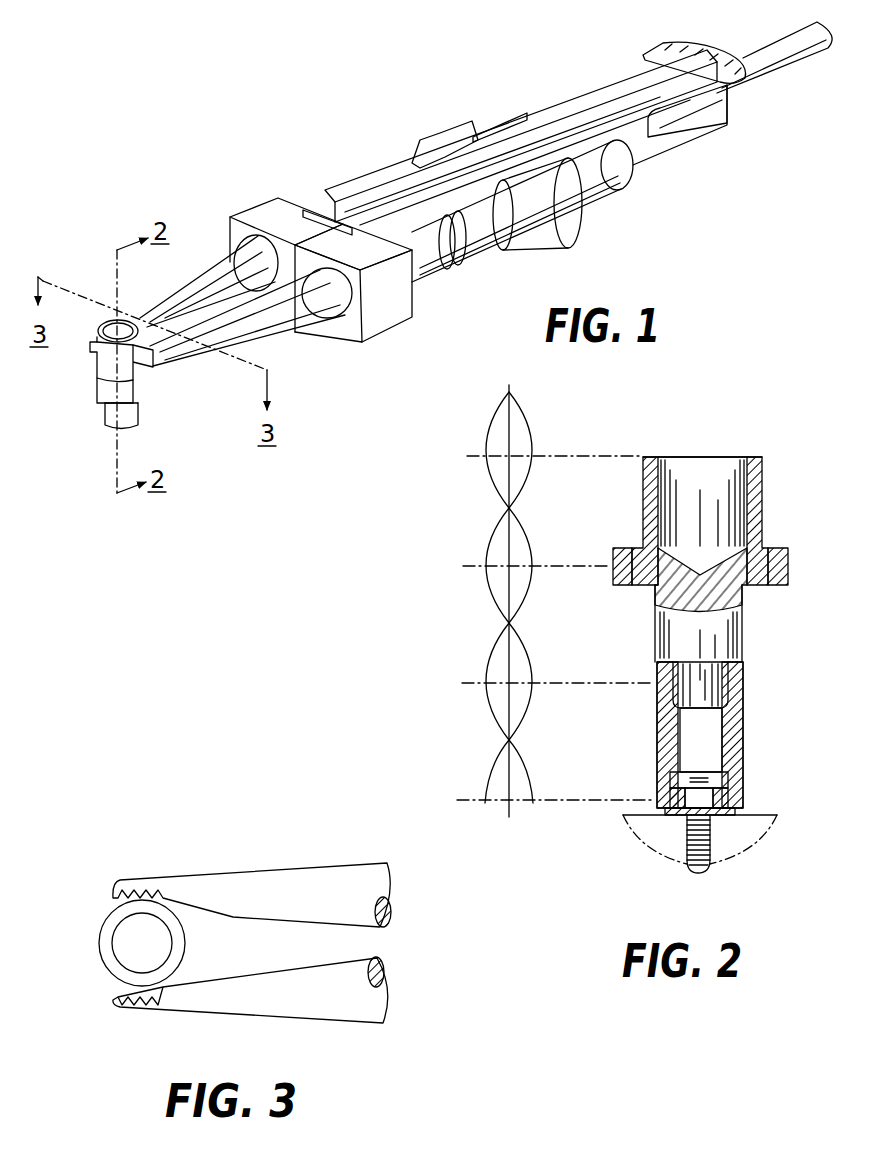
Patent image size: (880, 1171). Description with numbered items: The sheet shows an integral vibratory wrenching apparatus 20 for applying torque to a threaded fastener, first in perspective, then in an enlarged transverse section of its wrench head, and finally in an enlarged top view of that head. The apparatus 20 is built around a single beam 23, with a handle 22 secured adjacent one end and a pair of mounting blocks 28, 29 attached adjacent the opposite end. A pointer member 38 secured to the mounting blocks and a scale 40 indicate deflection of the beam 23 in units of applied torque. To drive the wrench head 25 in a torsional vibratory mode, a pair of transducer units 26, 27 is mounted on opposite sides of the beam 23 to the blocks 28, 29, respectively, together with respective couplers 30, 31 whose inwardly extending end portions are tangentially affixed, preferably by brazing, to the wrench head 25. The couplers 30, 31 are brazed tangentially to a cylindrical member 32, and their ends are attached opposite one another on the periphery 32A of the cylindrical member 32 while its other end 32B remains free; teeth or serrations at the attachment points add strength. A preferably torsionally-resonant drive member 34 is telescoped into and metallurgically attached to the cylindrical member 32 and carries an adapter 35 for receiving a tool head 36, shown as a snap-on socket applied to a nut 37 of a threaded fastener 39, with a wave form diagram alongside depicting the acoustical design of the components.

In FIG. 1, the vibratory wrenching apparatus 20 is at (337, 124).
In FIG. 1, the handle 22 is at (802, 68).
In FIG. 1, the beam 23 is at (680, 142).
In FIG. 1, the wrench head 25 is at (92, 389).
In FIG. 1, the transducer unit 26 is at (565, 228).
In FIG. 1, the transducer unit 27 is at (453, 142).
In FIG. 1, the mounting block 28 is at (400, 320).
In FIG. 1, the mounting block 29 is at (262, 200).
In FIG. 1, the coupler 30 is at (290, 332).
In FIG. 2, the coupler 30 is at (788, 552).
In FIG. 3, the coupler 30 is at (290, 1020).
In FIG. 1, the coupler 31 is at (196, 282).
In FIG. 2, the coupler 31 is at (613, 550).
In FIG. 3, the coupler 31 is at (293, 870).
In FIG. 2, the cylindrical member 32 is at (762, 470).
In FIG. 3, the cylindrical member 32 is at (100, 953).
In FIG. 2, the periphery of cylindrical member 32A is at (757, 587).
In FIG. 2, the free end of cylindrical member 32B is at (753, 457).
In FIG. 2, the drive member 34 is at (658, 607).
In FIG. 2, the adapter 35 is at (725, 685).
In FIG. 2, the tool head 36 is at (745, 740).
In FIG. 2, the nut 37 is at (678, 797).
In FIG. 1, the pointer member 38 is at (605, 87).
In FIG. 2, the threaded fastener 39 is at (685, 869).
In FIG. 1, the scale 40 is at (650, 53).